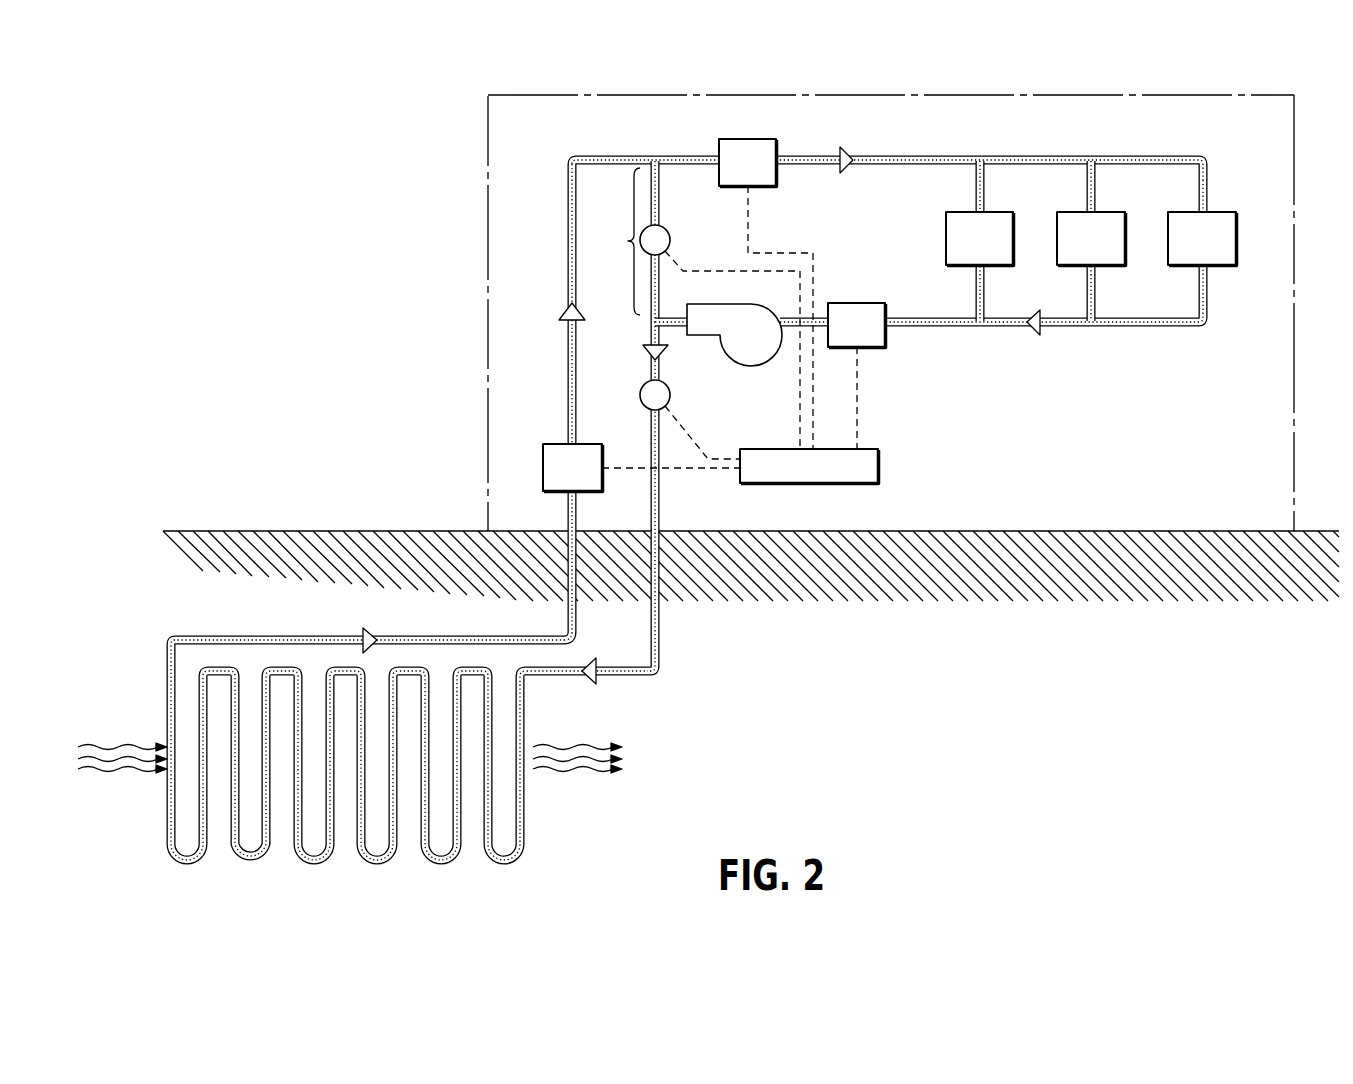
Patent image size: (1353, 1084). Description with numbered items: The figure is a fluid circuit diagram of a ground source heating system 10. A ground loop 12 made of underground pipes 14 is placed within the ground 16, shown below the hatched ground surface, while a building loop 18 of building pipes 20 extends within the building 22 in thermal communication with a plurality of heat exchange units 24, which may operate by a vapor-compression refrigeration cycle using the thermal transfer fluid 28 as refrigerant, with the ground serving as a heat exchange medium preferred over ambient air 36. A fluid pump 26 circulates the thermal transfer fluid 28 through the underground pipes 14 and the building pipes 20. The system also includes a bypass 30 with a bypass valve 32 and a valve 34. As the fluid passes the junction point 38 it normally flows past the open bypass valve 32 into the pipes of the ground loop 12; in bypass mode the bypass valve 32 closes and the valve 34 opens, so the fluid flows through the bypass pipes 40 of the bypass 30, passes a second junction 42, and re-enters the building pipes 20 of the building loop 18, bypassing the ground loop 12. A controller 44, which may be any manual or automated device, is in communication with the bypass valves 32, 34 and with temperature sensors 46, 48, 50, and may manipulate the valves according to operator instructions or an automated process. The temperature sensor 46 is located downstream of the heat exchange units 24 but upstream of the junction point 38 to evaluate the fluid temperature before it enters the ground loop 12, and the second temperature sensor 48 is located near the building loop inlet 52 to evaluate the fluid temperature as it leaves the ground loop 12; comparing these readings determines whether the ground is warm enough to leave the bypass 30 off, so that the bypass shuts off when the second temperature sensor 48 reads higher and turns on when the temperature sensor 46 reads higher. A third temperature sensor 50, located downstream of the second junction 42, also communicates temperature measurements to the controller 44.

The ground source heating system 10 is at (226, 170).
The ground loop 12 is at (363, 776).
The underground pipes 14 is at (378, 765).
The ground 16 is at (426, 578).
The building loop 18 is at (1208, 350).
The building pipes 20 is at (1208, 290).
The building 22 is at (488, 296).
The heat exchange units 24 is at (950, 211).
The fluid pump 26 is at (749, 366).
The thermal transfer fluid 28 is at (928, 157).
The bypass 30 is at (618, 241).
The bypass valve 32 is at (671, 395).
The valve 34 is at (671, 241).
The ambient air 36 is at (320, 441).
The junction point 38 is at (646, 332).
The bypass pipes 40 is at (660, 208).
The second junction 42 is at (654, 150).
The controller 44 is at (879, 466).
The temperature sensor 46 is at (880, 348).
The second temperature sensor 48 is at (543, 467).
The third temperature sensor 50 is at (771, 187).
The building loop inlet 52 is at (566, 526).